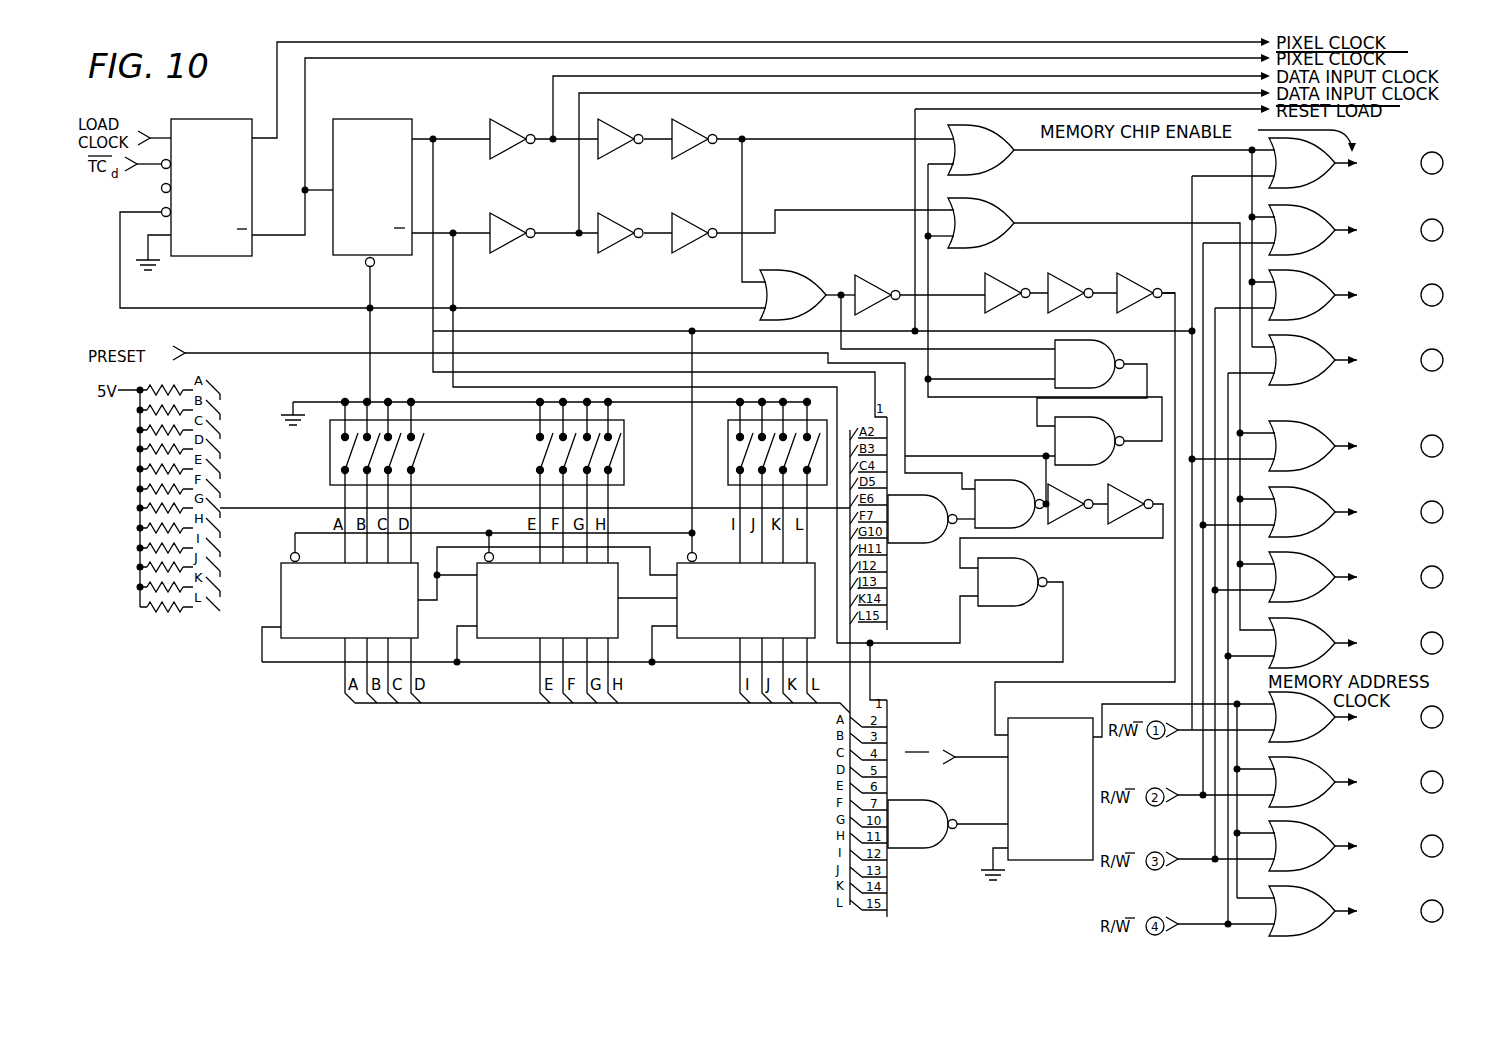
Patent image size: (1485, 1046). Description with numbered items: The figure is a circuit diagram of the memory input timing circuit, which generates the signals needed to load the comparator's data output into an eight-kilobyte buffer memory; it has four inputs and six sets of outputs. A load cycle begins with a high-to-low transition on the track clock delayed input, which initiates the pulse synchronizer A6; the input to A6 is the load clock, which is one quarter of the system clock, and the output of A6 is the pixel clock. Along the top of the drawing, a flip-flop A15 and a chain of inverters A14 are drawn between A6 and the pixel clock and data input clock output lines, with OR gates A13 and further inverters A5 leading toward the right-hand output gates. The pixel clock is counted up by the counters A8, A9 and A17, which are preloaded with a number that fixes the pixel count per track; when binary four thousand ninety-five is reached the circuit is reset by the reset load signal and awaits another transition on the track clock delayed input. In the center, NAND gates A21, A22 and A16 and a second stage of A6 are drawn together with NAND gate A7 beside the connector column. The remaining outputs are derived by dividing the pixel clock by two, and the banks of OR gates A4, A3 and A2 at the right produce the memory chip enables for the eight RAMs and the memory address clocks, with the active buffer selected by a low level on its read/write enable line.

The pulse synchronizer A6 is at (697, 499).
The flip-flop A15 is at (757, 409).
The inverter A14 is at (710, 199).
The OR gate A13 is at (1007, 370).
The inverter A5 is at (1010, 403).
The NAND gate A21 is at (704, 488).
The NAND gate A22 is at (1006, 492).
The NAND gate A16 is at (931, 510).
The counter A17 is at (469, 597).
The counter A8 is at (564, 598).
The counter A9 is at (555, 498).
The NAND gate A7 is at (948, 812).
The OR gate A4 is at (1317, 262).
The OR gate A3 is at (1317, 545).
The OR gate A2 is at (1340, 814).